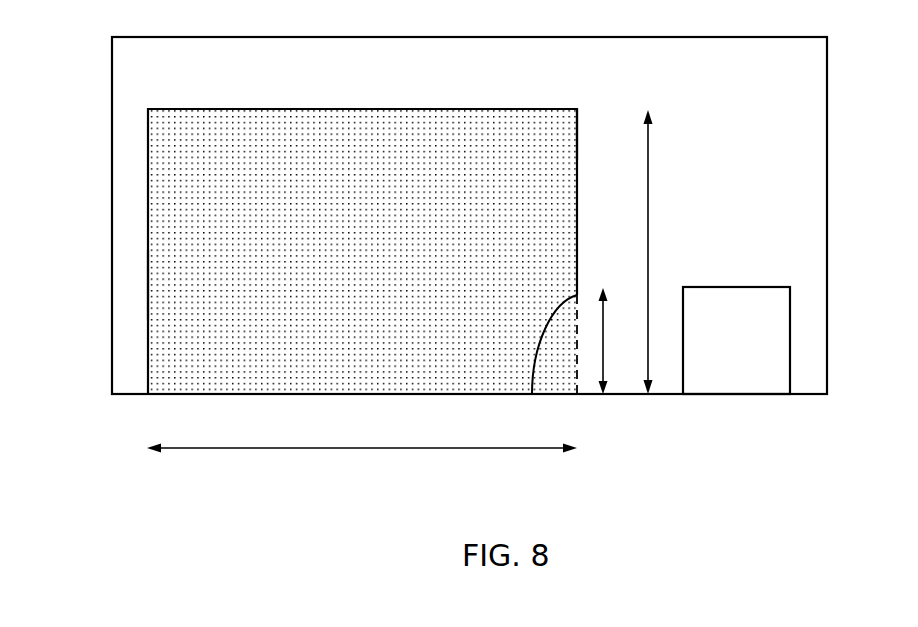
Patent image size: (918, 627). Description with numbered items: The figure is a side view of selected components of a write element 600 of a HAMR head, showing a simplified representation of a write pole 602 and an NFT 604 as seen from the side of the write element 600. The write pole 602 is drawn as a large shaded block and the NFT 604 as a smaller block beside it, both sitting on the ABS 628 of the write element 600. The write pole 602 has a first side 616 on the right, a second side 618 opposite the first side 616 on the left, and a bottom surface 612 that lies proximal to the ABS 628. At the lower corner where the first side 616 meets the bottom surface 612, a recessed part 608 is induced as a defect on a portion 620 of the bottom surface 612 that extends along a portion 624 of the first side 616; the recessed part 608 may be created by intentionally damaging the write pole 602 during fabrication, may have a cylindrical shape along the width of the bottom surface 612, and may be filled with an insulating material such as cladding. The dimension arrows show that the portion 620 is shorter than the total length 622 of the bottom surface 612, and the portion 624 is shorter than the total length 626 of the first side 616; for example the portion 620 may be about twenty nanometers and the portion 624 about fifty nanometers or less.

The write element 600 is at (485, 37).
The write pole 602 is at (306, 109).
The NFT 604 is at (717, 287).
The recessed part 608 is at (563, 342).
The bottom surface 612 is at (330, 390).
The first side 616 is at (585, 143).
The second side 618 is at (154, 285).
The portion of the bottom surface 620 is at (564, 400).
The total length of the bottom surface 622 is at (362, 461).
The portion of the first side 624 is at (621, 341).
The total length of the first side 626 is at (667, 252).
The ABS 628 is at (135, 394).